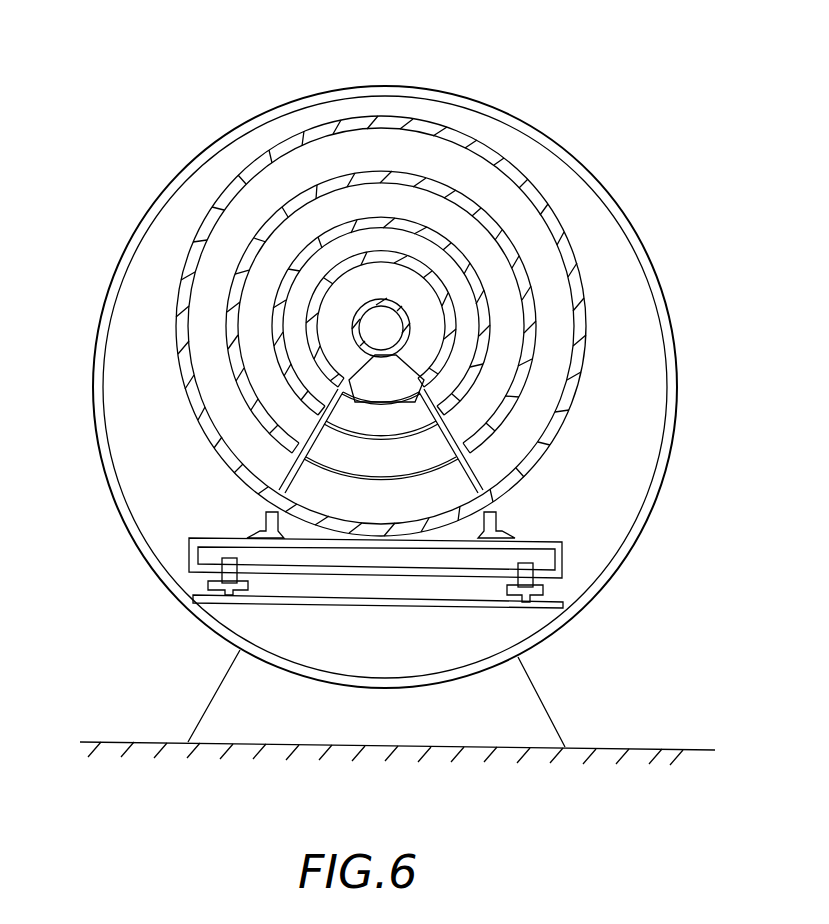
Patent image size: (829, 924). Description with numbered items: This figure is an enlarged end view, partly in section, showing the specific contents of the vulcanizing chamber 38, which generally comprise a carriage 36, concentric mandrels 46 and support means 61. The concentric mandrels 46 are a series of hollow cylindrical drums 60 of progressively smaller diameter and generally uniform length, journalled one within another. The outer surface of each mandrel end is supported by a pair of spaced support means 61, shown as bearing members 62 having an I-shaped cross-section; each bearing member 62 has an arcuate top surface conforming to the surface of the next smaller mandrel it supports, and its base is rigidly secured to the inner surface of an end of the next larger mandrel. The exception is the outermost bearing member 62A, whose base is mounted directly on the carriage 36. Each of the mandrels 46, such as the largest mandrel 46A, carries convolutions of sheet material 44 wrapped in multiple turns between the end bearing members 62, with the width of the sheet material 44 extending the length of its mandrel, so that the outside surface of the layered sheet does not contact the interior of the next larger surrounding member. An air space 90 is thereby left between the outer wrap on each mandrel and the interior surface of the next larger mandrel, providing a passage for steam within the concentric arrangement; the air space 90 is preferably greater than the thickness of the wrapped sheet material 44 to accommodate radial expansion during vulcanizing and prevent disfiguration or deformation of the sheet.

The carriage 36 is at (568, 562).
The vulcanizing chamber 38 is at (590, 270).
The sheet material 44 is at (558, 190).
The concentric mandrels 46 is at (600, 338).
The largest mandrel 46A is at (433, 120).
The hollow cylindrical drum 60 is at (205, 247).
The support means 61 is at (240, 437).
The bearing member 62 is at (285, 487).
The outermost bearing member 62A is at (258, 520).
The air space 90 is at (205, 197).